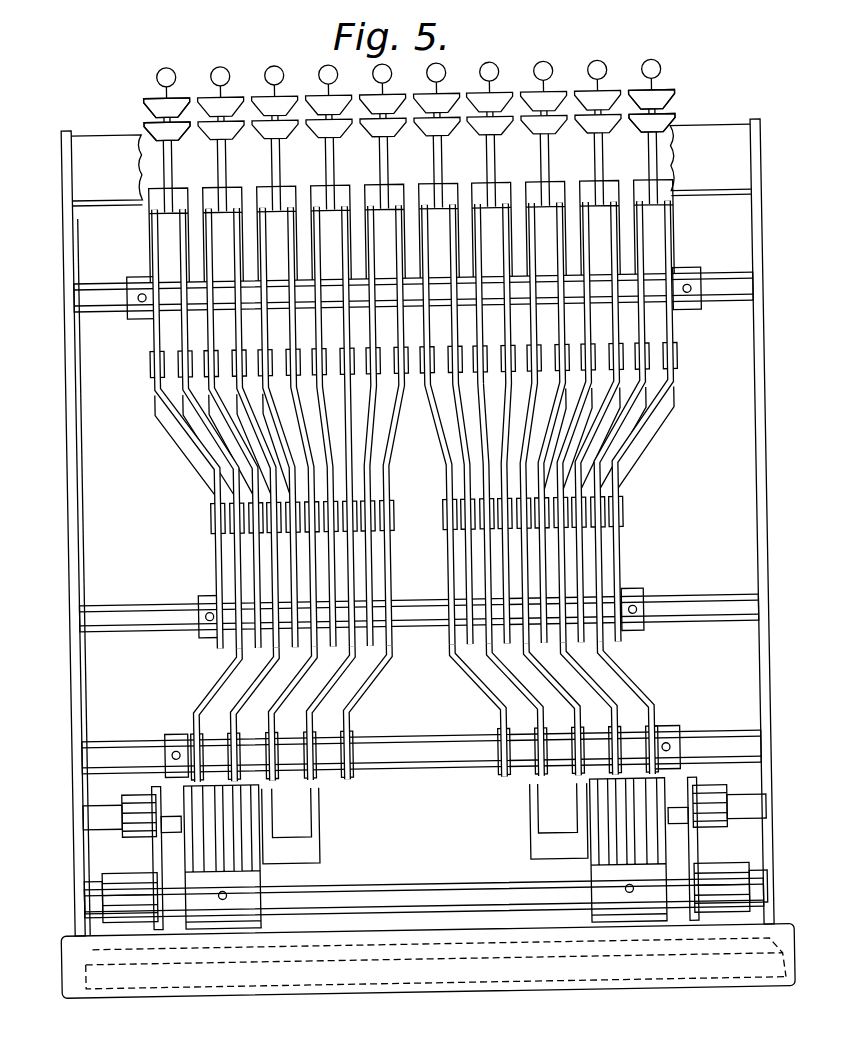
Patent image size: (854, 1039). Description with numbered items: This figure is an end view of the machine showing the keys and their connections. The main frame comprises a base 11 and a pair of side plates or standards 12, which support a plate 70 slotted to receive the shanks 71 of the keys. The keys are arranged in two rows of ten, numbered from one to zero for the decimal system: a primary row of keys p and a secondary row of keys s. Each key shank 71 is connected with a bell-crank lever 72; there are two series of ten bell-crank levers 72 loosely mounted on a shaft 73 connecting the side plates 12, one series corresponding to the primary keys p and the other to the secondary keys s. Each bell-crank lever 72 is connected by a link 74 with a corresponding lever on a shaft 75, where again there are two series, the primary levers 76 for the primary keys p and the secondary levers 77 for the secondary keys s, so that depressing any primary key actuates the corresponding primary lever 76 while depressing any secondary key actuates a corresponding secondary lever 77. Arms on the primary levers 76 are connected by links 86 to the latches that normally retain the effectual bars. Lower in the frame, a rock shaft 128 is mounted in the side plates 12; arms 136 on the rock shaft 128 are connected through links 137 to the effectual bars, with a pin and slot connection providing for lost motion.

The base 11 is at (405, 988).
The side plates or standards 12 is at (72, 455).
The plate 70 is at (104, 131).
The key shanks 71 is at (278, 158).
The bell-crank lever 72 is at (185, 331).
The shaft 73 is at (112, 292).
The link 74 is at (208, 438).
The shaft 75 is at (678, 617).
The primary lever 76 is at (475, 553).
The secondary lever 77 is at (256, 544).
The link 86 is at (237, 690).
The rock shaft 128 is at (400, 890).
The arm 136 is at (178, 840).
The link 137 is at (280, 796).
The secondary row of keys s is at (151, 98).
The primary row of keys p is at (151, 122).